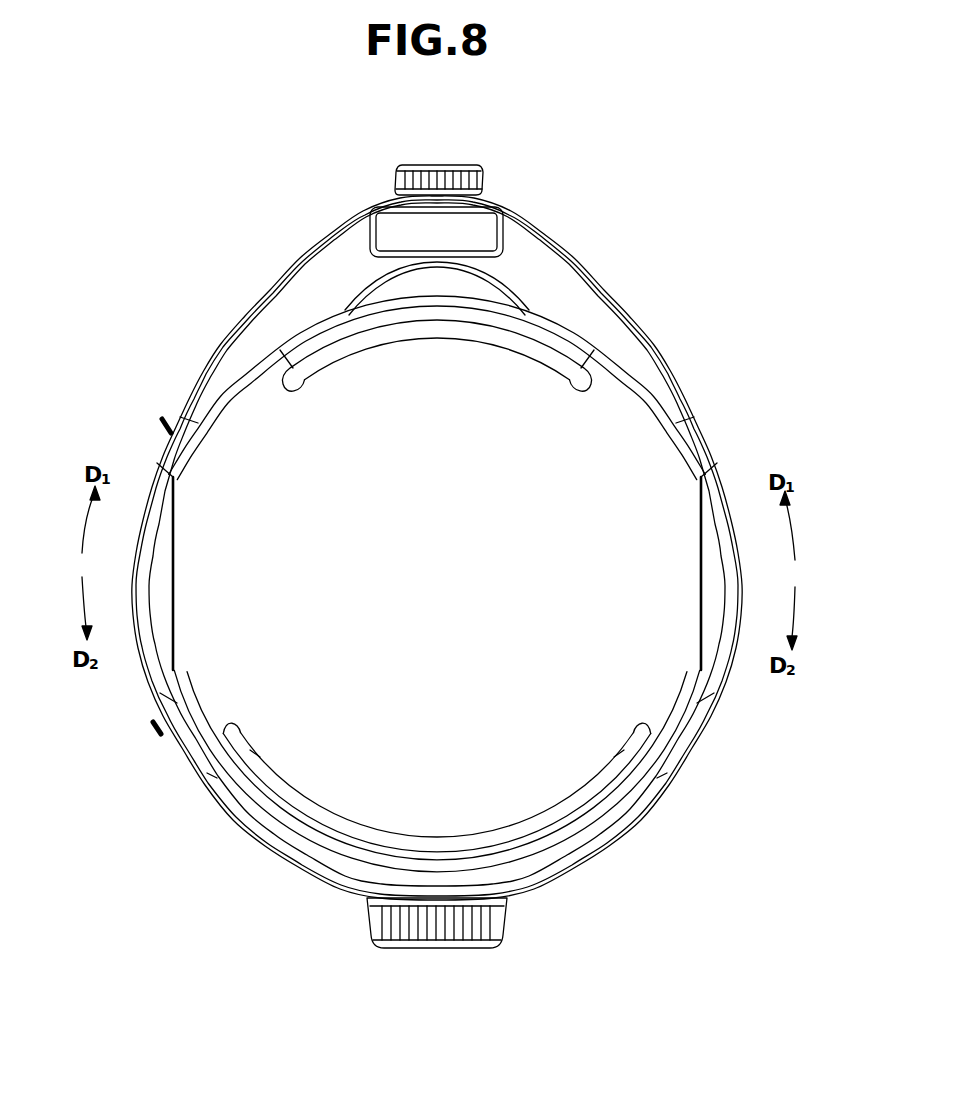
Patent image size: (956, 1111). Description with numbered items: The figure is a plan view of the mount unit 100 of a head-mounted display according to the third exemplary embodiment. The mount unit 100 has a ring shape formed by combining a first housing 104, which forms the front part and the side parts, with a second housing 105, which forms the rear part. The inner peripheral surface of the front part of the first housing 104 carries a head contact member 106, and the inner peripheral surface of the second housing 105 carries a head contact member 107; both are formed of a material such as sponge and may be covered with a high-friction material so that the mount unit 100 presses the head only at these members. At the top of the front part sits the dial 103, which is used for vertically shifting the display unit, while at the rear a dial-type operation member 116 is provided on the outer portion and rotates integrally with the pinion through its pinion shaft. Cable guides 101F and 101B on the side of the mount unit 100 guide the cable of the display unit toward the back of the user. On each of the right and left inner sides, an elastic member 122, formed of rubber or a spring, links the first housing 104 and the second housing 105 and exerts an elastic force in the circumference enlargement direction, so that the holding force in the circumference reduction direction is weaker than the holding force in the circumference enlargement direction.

The mount unit 100 is at (711, 321).
The cable guide 101F is at (165, 419).
The cable guide 101B is at (162, 731).
The dial 103 is at (441, 165).
The first housing 104 is at (559, 283).
The second housing 105 is at (612, 832).
The head contact member 106 is at (437, 339).
The head contact member 107 is at (545, 810).
The operation member 116 is at (437, 948).
The elastic member 122 is at (172, 640).